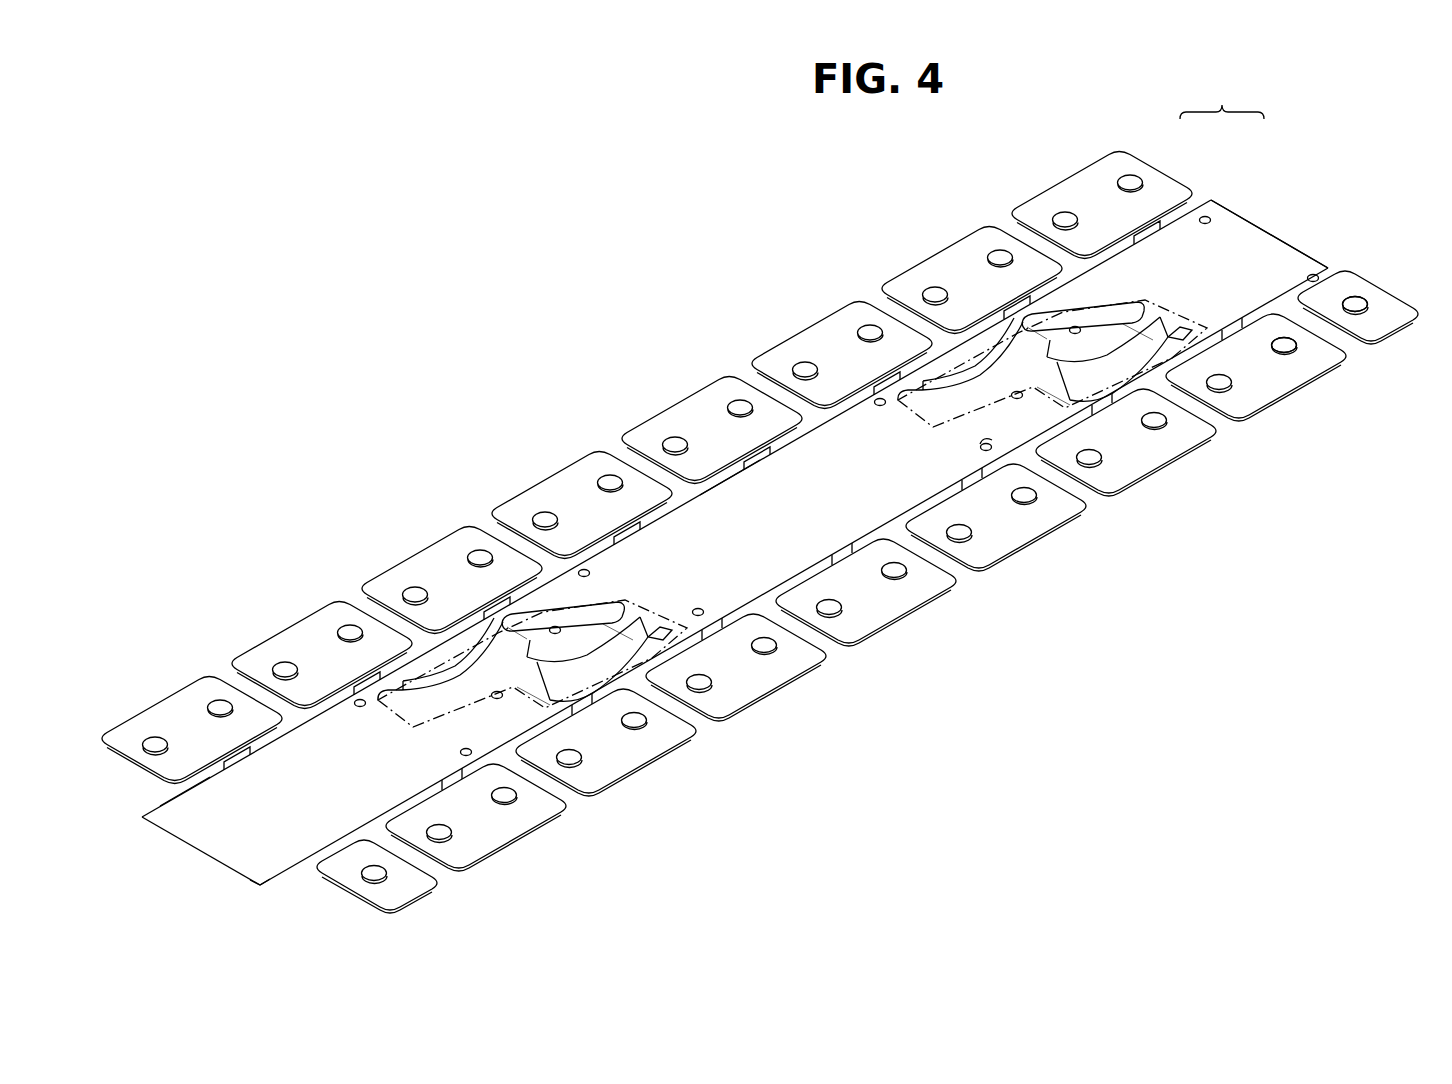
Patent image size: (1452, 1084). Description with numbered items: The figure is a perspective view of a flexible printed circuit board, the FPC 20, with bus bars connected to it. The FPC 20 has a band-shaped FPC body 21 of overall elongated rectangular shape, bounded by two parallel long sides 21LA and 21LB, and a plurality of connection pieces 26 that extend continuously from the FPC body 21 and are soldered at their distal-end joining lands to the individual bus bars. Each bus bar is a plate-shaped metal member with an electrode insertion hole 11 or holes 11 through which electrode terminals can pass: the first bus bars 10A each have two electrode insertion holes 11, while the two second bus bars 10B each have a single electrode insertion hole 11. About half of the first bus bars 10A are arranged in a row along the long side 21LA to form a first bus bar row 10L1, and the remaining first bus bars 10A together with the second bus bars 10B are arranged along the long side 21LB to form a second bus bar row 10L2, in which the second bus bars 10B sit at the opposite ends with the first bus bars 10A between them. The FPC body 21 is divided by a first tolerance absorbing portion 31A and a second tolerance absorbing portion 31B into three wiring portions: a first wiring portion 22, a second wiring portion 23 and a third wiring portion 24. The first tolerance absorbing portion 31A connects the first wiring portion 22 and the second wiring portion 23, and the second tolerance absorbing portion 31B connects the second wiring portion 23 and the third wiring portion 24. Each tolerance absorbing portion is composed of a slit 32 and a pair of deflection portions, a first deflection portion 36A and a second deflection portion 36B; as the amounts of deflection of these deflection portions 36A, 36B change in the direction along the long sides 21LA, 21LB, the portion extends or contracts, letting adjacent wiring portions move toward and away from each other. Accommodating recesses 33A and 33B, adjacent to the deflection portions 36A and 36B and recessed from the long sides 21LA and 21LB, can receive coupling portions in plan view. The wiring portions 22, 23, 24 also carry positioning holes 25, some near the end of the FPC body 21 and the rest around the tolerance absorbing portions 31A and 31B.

The first bus bar row 10L1 is at (656, 420).
The second bus bar row 10L2 is at (873, 566).
The first bus bar 10A is at (1272, 377).
The second bus bar 10B is at (400, 886).
The electrode insertion hole 11 is at (1289, 340).
The FPC 20 is at (1222, 98).
The FPC body 21 is at (1247, 206).
The long side 21LA is at (160, 803).
The long side 21LB is at (289, 876).
The first wiring portion 22 is at (372, 780).
The second wiring portion 23 is at (712, 580).
The third wiring portion 24 is at (1236, 288).
The positioning hole 25 is at (1010, 450).
The connection piece 26 is at (1148, 228).
The first tolerance absorbing portion 31A is at (430, 658).
The second tolerance absorbing portion 31B is at (950, 355).
The slit 32 is at (1104, 320).
The accommodating recess 33A is at (922, 388).
The accommodating recess 33B is at (1180, 340).
The first deflection portion 36A is at (1000, 368).
The second deflection portion 36B is at (1110, 385).